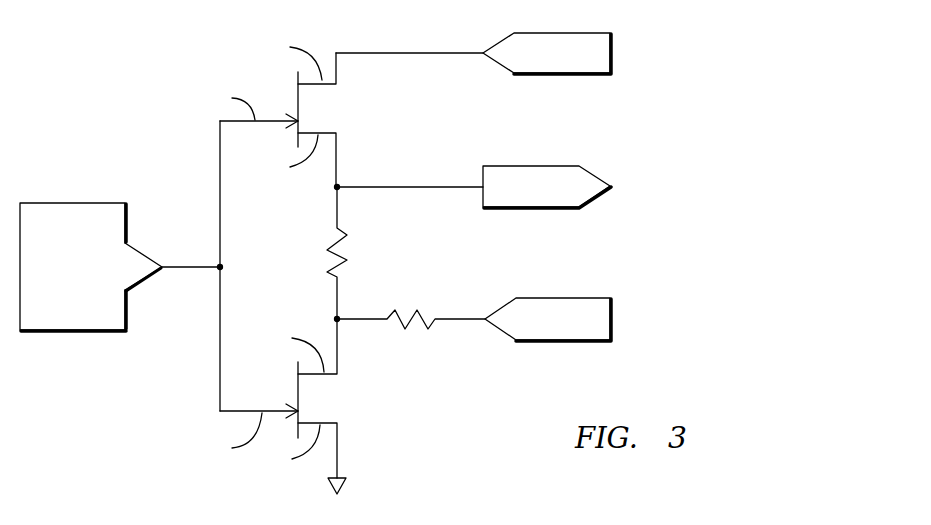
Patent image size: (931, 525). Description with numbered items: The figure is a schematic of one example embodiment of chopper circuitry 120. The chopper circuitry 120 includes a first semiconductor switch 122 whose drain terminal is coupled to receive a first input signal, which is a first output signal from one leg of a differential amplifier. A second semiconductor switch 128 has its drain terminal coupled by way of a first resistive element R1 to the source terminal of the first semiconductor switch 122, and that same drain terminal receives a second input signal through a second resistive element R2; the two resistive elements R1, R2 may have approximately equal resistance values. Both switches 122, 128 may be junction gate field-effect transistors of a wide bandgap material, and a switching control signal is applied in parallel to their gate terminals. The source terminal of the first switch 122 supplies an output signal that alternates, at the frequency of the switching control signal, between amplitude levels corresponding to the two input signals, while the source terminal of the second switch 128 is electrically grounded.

The chopper circuitry 120 is at (200, 57).
The first semiconductor switch 122 is at (300, 105).
The second semiconductor switch 128 is at (300, 394).
The first resistive element R1 is at (321, 253).
The second resistive element R2 is at (411, 305).